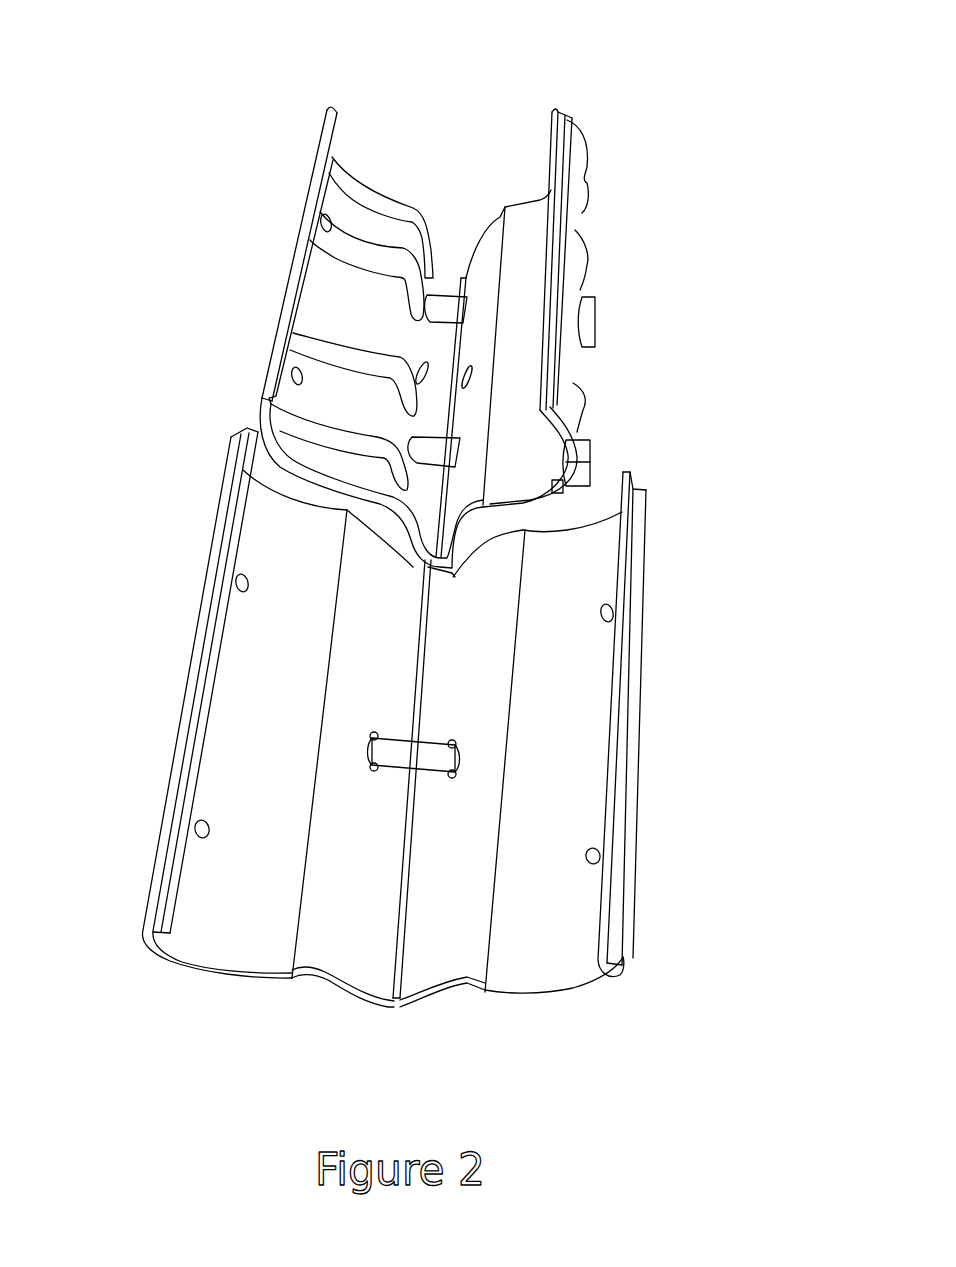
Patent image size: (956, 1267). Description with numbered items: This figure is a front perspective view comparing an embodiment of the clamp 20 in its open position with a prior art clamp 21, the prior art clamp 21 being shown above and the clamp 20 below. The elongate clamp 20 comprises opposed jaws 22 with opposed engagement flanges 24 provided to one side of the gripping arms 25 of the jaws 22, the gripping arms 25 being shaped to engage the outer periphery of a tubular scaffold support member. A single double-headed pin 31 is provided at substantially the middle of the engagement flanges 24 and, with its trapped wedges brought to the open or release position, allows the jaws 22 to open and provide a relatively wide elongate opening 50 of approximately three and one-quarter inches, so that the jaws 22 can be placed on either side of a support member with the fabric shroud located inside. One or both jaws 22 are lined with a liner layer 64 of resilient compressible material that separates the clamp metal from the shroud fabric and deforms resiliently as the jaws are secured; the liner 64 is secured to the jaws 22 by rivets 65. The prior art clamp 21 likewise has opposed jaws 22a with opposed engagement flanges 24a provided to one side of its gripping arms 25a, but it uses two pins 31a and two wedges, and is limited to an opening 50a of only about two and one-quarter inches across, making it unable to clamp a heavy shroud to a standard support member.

The clamp 20 is at (800, 682).
The prior art clamp 21 is at (800, 292).
The jaws 22 is at (207, 617).
The jaws 22a is at (325, 133).
The engagement flanges 24 is at (362, 973).
The engagement flanges 24a is at (453, 282).
The gripping arms 25 is at (173, 767).
The gripping arms 25a is at (300, 228).
The pin 31 is at (400, 750).
The pins 31a is at (440, 310).
The opening 50 is at (388, 1015).
The opening 50a is at (433, 172).
The liner layer 64 is at (232, 943).
The rivets 65 is at (243, 578).